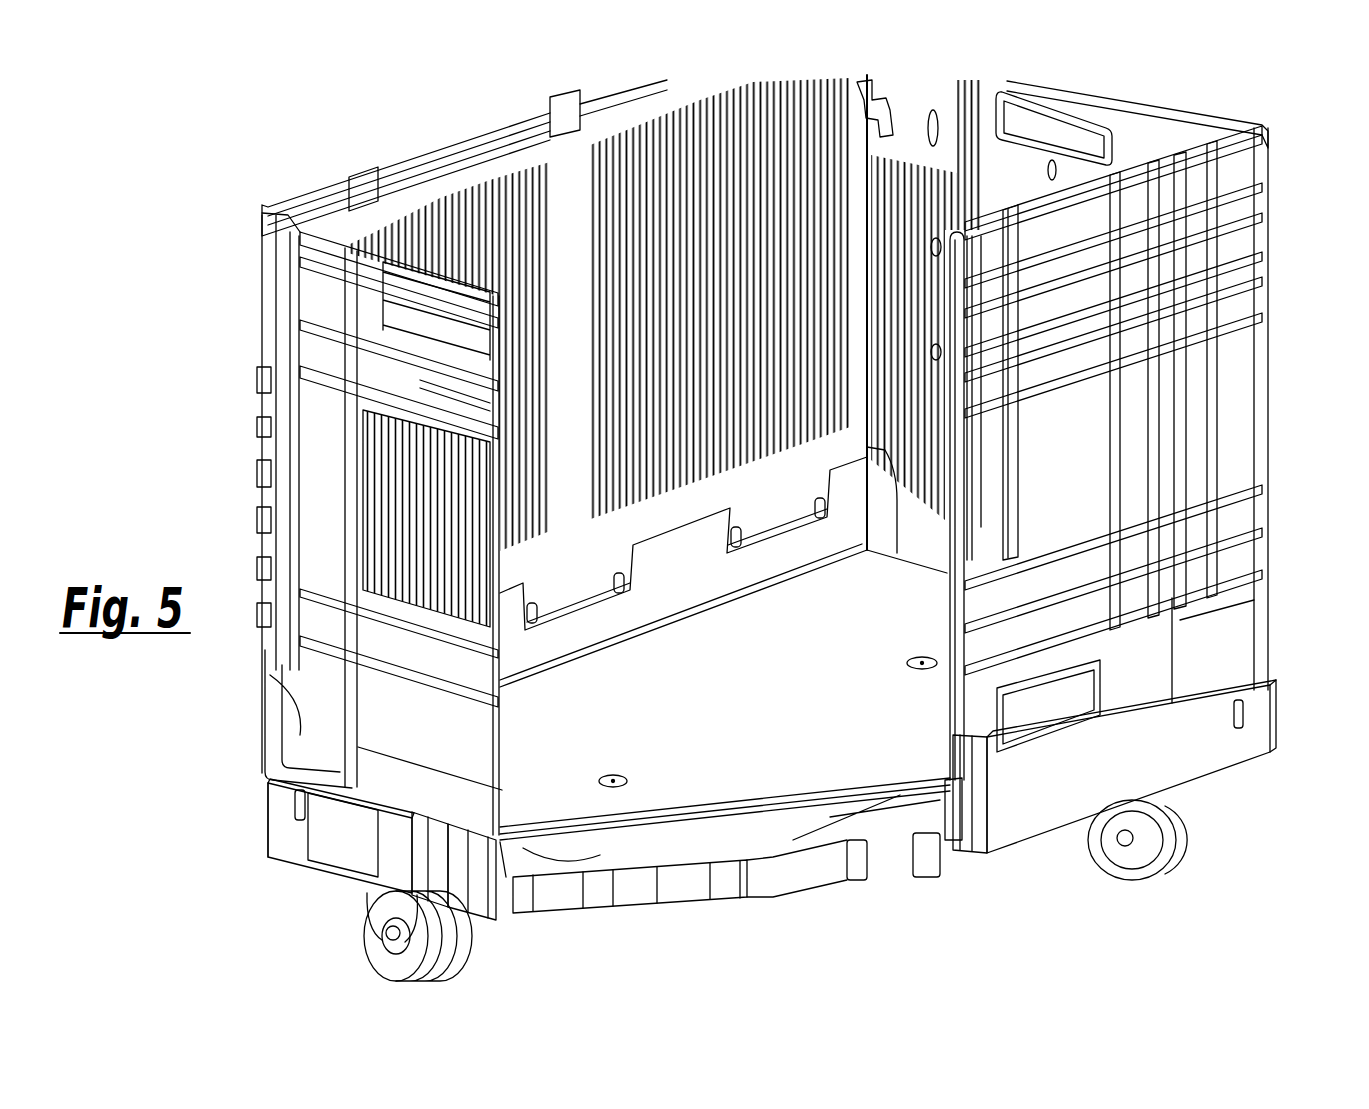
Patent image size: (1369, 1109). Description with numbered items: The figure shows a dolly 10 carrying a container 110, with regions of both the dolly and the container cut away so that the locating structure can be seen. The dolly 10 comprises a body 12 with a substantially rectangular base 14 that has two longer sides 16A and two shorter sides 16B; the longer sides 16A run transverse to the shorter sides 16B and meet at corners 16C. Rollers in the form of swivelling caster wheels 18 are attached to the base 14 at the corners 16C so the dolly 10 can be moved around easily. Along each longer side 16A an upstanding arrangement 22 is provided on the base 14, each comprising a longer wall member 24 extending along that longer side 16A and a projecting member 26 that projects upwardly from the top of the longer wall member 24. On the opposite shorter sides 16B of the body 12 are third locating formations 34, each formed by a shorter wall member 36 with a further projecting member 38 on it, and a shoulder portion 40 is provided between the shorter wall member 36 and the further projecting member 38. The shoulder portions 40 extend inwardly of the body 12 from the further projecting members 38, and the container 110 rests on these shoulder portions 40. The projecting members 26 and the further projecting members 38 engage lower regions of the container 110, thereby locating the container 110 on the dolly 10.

The container 110 is at (290, 198).
The dolly 10 is at (732, 790).
The body 12 is at (508, 900).
The base 14 is at (710, 840).
The longer side 16A is at (1057, 837).
The shorter side 16B is at (347, 877).
The corner 16C is at (267, 837).
The wheel 18 is at (466, 942).
The upstanding arrangement 22 is at (1117, 720).
The longer wall member 24 is at (1073, 747).
The projecting member 26 is at (980, 778).
The third locating formation 34 is at (386, 796).
The shorter wall member 36 is at (407, 817).
The further projecting member 38 is at (460, 807).
The shoulder portion 40 is at (560, 850).